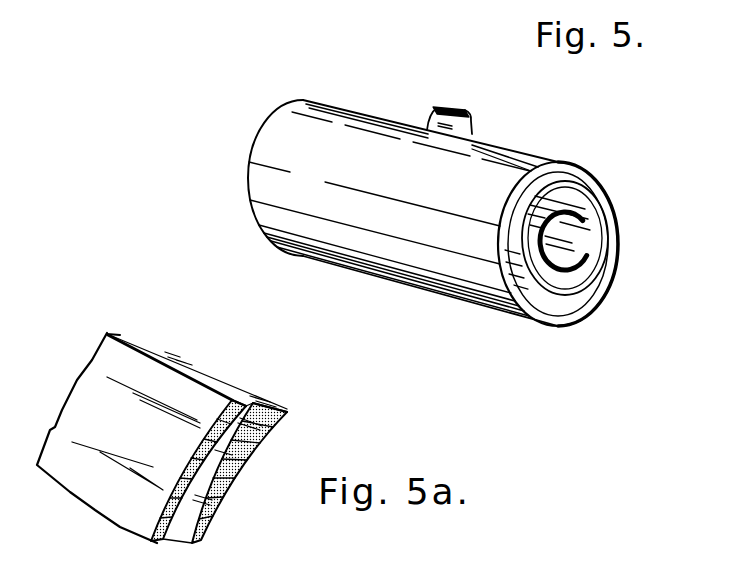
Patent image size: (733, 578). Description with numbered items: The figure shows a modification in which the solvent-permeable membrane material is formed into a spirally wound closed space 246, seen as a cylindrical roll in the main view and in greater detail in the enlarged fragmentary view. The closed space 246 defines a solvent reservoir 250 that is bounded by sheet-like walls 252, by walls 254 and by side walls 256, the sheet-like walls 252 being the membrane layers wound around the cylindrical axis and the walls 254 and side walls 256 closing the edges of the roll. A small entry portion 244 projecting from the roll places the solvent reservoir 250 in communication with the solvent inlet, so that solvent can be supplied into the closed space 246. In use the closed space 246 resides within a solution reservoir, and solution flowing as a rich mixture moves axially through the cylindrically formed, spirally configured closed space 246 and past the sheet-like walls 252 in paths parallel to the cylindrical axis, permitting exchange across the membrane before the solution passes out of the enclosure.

In FIG. 5, the entry portion 244 is at (466, 114).
In FIG. 5, the spirally wound closed space 246 is at (348, 104).
In FIG. 5A, the spirally wound closed space 246 is at (125, 322).
In FIG. 5A, the solvent reservoir 250 is at (174, 514).
In FIG. 5, the sheet-like walls 252 is at (477, 167).
In FIG. 5A, the sheet-like walls 252 is at (152, 443).
In FIG. 5, the walls 254 is at (556, 162).
In FIG. 5A, the walls 254 is at (228, 378).
In FIG. 5, the side walls 256 is at (261, 132).